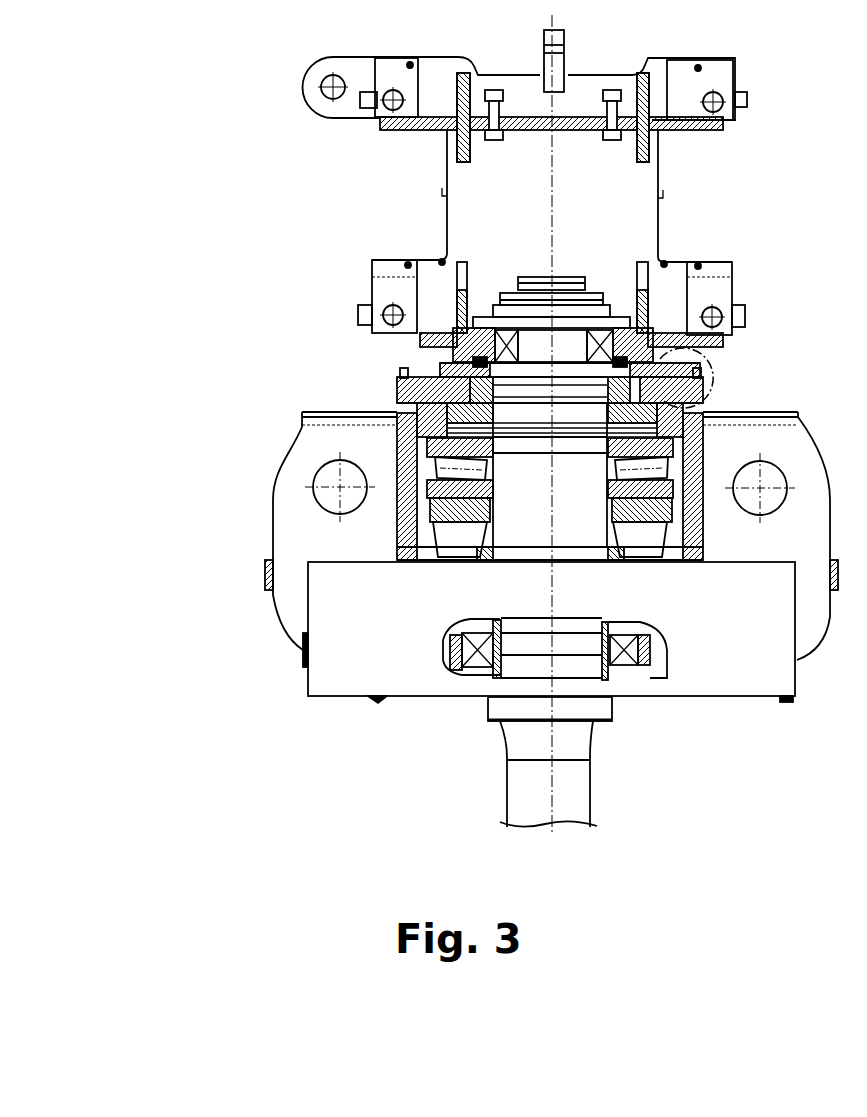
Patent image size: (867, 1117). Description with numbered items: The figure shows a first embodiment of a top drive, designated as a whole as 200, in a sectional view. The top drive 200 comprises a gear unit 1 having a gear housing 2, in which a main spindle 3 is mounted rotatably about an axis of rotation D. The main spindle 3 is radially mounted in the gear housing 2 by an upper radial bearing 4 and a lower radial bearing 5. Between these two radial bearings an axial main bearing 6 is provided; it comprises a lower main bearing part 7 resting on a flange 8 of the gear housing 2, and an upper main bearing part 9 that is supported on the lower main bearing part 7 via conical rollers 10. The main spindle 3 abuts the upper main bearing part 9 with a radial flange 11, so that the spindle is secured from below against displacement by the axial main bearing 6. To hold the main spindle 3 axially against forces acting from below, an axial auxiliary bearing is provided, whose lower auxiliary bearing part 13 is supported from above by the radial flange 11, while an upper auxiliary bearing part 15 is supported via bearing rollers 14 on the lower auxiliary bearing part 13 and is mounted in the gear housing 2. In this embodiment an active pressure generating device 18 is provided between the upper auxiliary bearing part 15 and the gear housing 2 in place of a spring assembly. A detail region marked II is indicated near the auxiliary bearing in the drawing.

The top drive 200 is at (114, 102).
The gear unit 1 is at (160, 303).
The gear housing 2 is at (398, 345).
The main spindle 3 is at (590, 505).
The upper radial bearing 4 is at (493, 345).
The lower radial bearing 5 is at (650, 647).
The axial main bearing 6 is at (372, 470).
The lower main bearing part 7 is at (703, 520).
The flange 8 is at (705, 547).
The upper main bearing part 9 is at (703, 453).
The conical rollers 10 is at (400, 495).
The radial flange 11 is at (400, 446).
The lower auxiliary bearing part 13 is at (497, 392).
The bearing rollers 14 is at (683, 402).
The upper auxiliary bearing part 15 is at (400, 389).
The active pressure generating device 18 is at (400, 360).
The detail section II is at (695, 378).
The axis of rotation D is at (548, 790).